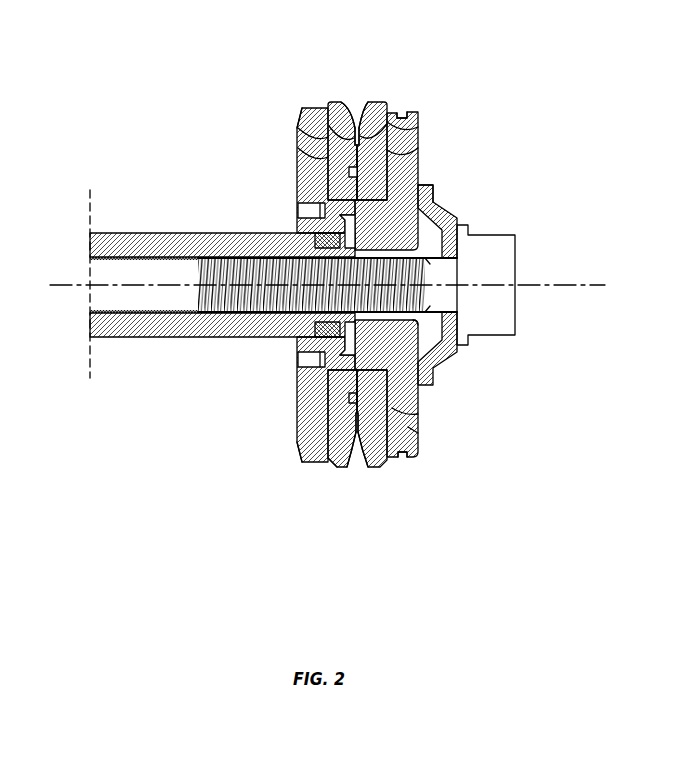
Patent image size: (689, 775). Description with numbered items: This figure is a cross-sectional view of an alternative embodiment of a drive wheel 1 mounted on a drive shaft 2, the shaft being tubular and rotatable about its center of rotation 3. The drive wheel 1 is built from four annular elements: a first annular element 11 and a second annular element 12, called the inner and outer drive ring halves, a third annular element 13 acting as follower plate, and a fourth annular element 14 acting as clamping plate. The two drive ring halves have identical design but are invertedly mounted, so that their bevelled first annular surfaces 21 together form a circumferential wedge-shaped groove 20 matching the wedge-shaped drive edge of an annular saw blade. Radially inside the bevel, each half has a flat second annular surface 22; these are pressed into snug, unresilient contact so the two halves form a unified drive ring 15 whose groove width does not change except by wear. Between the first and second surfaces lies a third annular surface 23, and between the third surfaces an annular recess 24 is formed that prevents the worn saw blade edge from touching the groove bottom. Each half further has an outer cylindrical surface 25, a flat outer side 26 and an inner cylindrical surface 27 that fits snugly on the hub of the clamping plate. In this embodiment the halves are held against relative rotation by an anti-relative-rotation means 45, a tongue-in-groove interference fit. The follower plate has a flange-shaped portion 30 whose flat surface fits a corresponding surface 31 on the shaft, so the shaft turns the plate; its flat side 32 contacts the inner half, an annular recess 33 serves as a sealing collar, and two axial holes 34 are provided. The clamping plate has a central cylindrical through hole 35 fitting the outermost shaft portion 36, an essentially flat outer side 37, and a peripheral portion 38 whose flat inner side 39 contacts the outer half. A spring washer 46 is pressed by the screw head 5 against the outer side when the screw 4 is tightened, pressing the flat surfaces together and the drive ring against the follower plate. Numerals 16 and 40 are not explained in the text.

The drive wheel 1 is at (359, 141).
The drive shaft 2 is at (205, 242).
The center of rotation 3 is at (68, 284).
The screw 4 is at (435, 276).
The screw head 5 is at (503, 278).
The first annular element 11 is at (346, 465).
The second annular element 12 is at (378, 445).
The third annular element 13 is at (305, 447).
The fourth annular element 14 is at (406, 440).
The drive ring 15 is at (370, 466).
The shoulder 16 is at (412, 117).
The wedge-shaped groove 20 is at (357, 115).
The first annular surface 21 is at (345, 101).
The second annular surface 22 is at (300, 148).
The third annular surface 23 is at (310, 112).
The annular recess 24 is at (357, 435).
The outer cylindrical surface 25 is at (340, 104).
The flat outer side 26 is at (328, 134).
The inner cylindrical surface 27 is at (424, 204).
The flange-shaped portion 30 is at (325, 242).
The surface on the drive shaft 31 is at (300, 210).
The side of the follower plate 32 is at (340, 462).
The annular recess 33 is at (305, 360).
The holes 34 is at (310, 392).
The central cylindrical through hole 35 is at (433, 296).
The outermost portion of the drive shaft 36 is at (422, 322).
The outer side of the clamping plate 37 is at (417, 432).
The peripheral portion 38 is at (406, 412).
The inner side 39 is at (388, 462).
The flange 40 is at (412, 337).
The anti-relative-rotation means 45 is at (361, 172).
The spring washer 46 is at (460, 222).